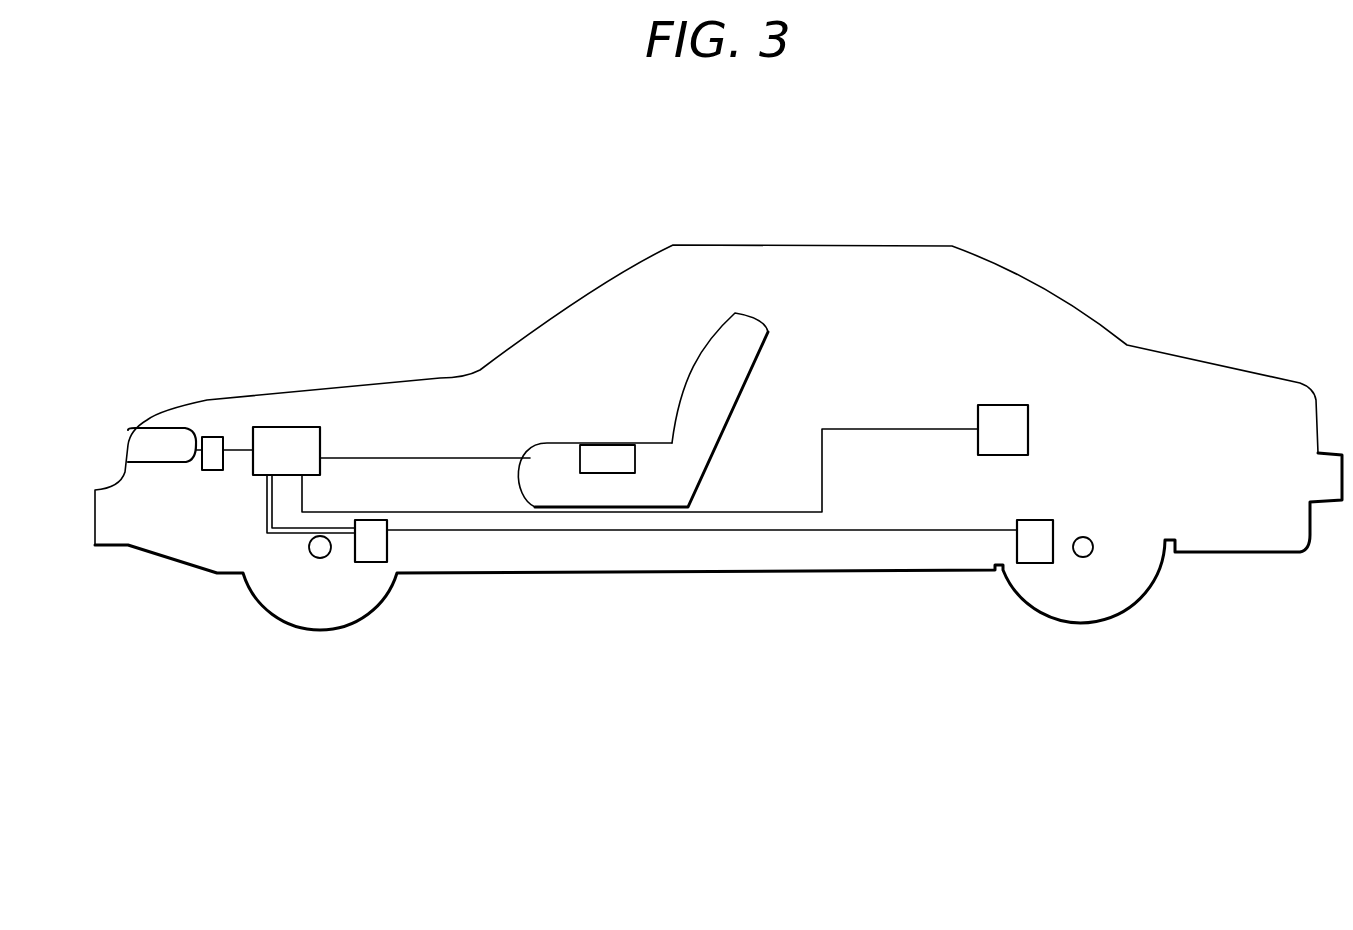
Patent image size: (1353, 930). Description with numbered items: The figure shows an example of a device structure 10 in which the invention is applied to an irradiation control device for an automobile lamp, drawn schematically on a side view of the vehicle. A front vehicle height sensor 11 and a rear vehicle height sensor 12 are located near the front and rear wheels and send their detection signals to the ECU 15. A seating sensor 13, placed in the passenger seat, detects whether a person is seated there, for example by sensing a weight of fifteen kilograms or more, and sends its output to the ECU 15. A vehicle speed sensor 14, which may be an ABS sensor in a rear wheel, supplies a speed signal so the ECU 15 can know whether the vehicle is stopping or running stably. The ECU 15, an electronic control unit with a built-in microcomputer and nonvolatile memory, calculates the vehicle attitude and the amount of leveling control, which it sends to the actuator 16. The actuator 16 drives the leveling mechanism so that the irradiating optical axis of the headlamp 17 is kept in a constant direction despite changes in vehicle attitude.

The device structure 10 is at (234, 314).
The front vehicle height sensor 11 is at (355, 552).
The rear vehicle height sensor 12 is at (1035, 520).
The seating sensor 13 is at (612, 443).
The vehicle speed sensor 14 is at (1003, 405).
The ECU 15 is at (322, 437).
The actuator 16 is at (212, 472).
The headlamp 17 is at (128, 447).